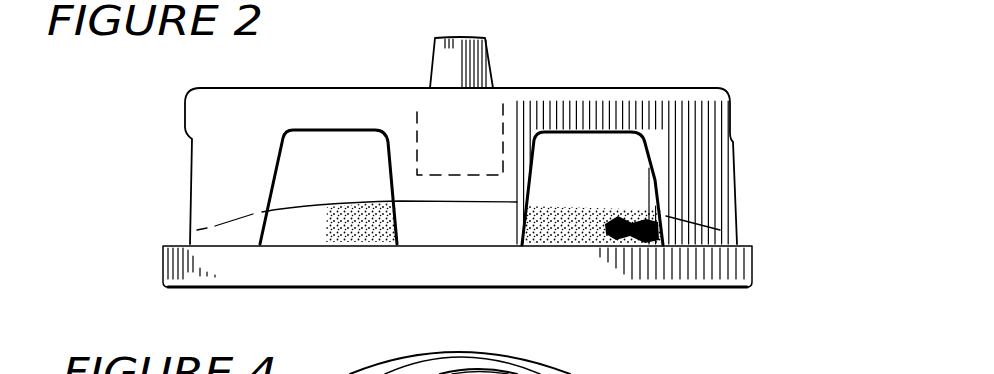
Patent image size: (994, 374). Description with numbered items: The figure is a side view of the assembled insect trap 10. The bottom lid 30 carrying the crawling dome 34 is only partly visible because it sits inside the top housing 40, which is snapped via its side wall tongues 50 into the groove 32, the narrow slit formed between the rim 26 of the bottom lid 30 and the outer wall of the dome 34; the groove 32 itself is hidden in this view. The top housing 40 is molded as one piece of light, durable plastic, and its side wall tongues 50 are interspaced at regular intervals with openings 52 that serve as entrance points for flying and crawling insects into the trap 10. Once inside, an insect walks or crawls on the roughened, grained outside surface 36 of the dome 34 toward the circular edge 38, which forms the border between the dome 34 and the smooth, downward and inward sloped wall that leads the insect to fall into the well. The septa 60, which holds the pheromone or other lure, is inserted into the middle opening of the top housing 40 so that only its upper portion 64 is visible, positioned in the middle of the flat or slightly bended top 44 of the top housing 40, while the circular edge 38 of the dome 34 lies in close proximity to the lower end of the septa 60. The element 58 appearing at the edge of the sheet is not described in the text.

In FIG. 2, the dispenser 10 is at (717, 56).
In FIG. 2, the base 26 is at (160, 259).
In FIG. 2, the bottom wall 30 is at (752, 289).
In FIG. 2, the flange 32 is at (757, 262).
In FIG. 2, the liner bag 34 is at (303, 205).
In FIG. 2, the granular product 36 is at (311, 219).
In FIG. 2, the product level 38 is at (581, 202).
In FIG. 2, the housing 40 is at (732, 96).
In FIG. 2, the top wall 44 is at (357, 87).
In FIG. 2, the window 50 is at (419, 228).
In FIG. 2, the window opening 52 is at (357, 177).
In FIG. 2, the knob 60 is at (453, 36).
In FIG. 2, the knob side wall 64 is at (496, 66).
In FIG. 4, the dial 58 is at (539, 363).